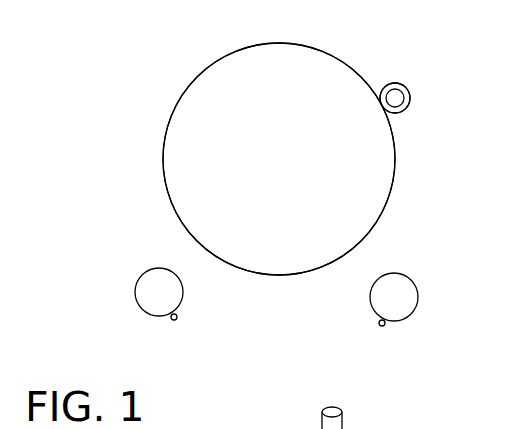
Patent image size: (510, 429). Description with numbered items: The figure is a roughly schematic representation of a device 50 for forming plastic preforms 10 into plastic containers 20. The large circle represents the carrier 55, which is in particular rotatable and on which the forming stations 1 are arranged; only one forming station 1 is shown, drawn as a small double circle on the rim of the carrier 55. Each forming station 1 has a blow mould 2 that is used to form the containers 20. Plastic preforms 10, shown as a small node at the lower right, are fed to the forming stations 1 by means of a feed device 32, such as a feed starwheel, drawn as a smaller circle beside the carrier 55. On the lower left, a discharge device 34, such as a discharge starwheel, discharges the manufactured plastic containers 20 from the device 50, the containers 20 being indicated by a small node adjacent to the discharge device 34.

The forming station 1 is at (420, 90).
The blow mould 2 is at (395, 95).
The plastic preform 10 is at (380, 325).
The plastic container 20 is at (176, 320).
The feed device 32 is at (400, 293).
The discharge device 34 is at (154, 295).
The device for forming plastic preforms into plastic containers 50 is at (178, 55).
The carrier 55 is at (177, 158).